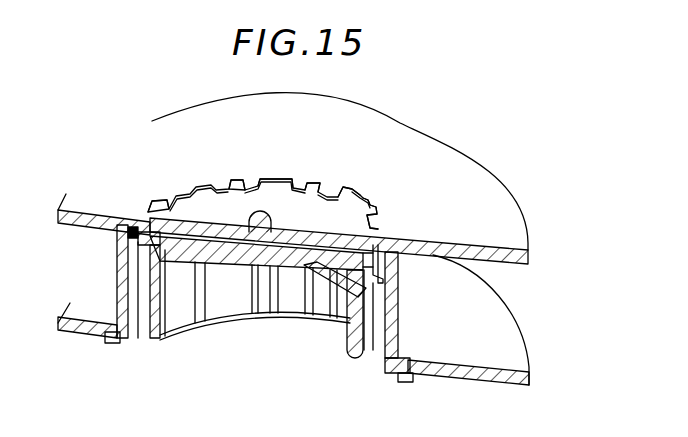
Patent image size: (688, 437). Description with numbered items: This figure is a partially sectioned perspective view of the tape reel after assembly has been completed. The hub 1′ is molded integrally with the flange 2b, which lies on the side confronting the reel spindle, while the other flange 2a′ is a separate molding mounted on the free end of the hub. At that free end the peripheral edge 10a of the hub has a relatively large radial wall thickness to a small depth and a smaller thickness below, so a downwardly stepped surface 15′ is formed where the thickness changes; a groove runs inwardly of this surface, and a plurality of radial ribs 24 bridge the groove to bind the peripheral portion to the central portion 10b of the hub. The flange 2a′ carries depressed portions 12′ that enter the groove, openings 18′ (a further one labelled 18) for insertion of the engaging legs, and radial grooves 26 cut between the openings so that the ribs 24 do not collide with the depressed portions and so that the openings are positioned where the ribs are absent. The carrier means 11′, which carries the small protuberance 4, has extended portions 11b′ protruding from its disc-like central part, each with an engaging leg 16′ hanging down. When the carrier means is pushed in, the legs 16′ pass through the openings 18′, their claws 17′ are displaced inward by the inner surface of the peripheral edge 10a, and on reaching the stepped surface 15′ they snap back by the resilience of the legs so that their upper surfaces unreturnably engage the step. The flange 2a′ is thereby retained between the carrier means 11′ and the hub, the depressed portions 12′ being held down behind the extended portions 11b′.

The flange 2a′ is at (483, 177).
The flange 2b is at (502, 333).
The peripheral edge 10a is at (115, 235).
The ribs 24 is at (150, 254).
The central portion 10b is at (235, 257).
The depressed portions 12′ is at (314, 315).
The engaging legs 16′ is at (341, 285).
The stepped surface 15′ is at (389, 272).
The engaging claws 17′ is at (388, 310).
The hub 1′ is at (386, 345).
The carrier means 11′ is at (223, 205).
The radial grooves 26 is at (152, 199).
The openings 18′ is at (272, 178).
The extended portions 11b′ is at (278, 188).
The tooth 18 is at (366, 196).
The small protuberance 4 is at (271, 211).